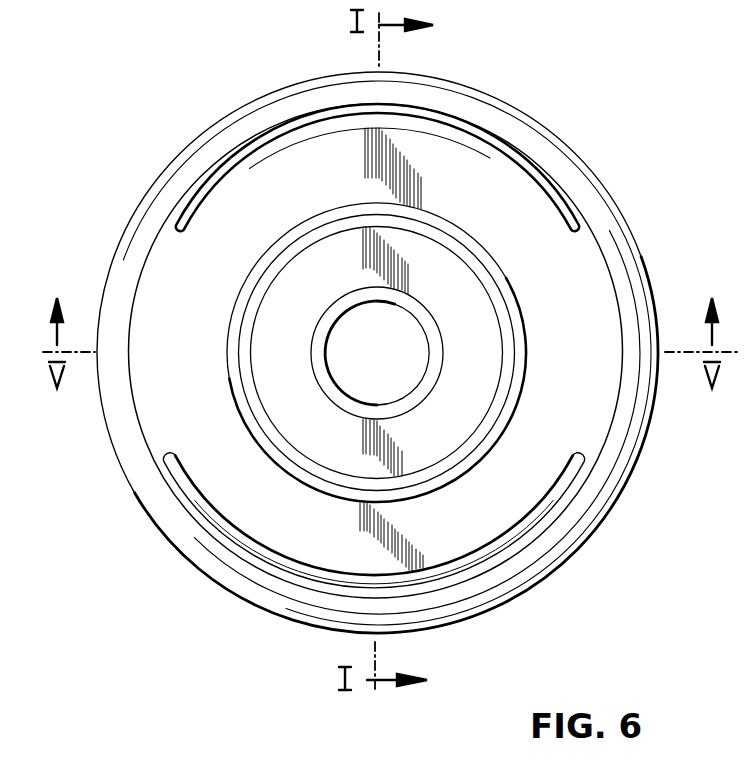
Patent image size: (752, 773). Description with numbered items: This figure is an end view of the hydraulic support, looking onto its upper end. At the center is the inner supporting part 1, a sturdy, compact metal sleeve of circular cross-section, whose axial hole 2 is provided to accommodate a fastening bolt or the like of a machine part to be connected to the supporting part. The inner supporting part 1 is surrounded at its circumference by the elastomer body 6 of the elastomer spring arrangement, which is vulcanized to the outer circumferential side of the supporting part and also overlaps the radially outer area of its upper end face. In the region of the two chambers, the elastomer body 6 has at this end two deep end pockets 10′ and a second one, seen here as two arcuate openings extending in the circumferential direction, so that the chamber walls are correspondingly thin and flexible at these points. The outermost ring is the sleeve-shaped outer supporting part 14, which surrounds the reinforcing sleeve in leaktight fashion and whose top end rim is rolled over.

The inner supporting part 1 is at (319, 260).
The axial hole 2 is at (410, 344).
The elastomer body 6 is at (590, 432).
The end pocket 10′ is at (231, 168).
The outer supporting part 14 is at (582, 196).